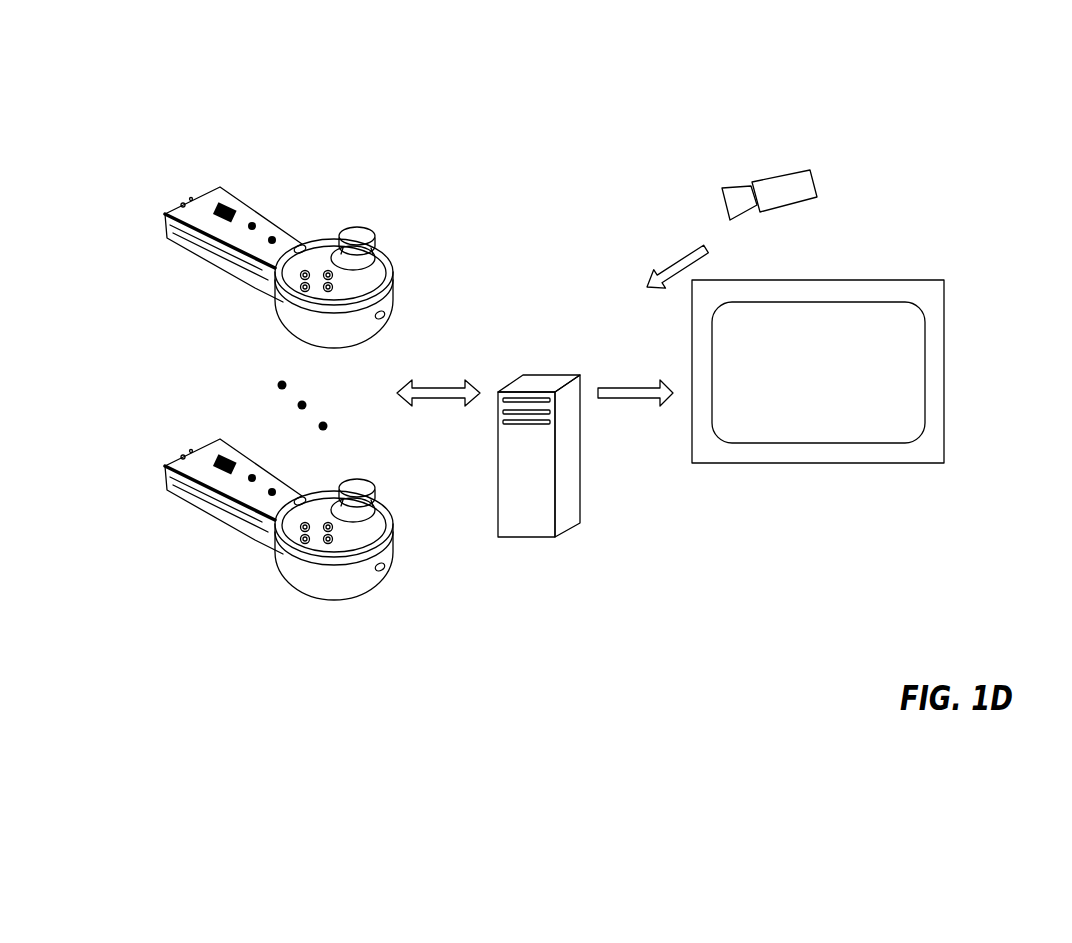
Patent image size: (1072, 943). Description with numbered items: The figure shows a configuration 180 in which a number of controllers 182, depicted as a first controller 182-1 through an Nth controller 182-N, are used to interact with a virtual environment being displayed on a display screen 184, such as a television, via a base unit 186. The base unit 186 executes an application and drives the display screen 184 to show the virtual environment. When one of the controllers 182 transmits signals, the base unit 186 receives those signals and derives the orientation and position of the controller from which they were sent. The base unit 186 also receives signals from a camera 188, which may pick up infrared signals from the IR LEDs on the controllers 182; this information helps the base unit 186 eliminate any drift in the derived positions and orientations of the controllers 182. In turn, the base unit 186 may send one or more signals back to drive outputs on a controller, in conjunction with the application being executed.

The configuration 180 is at (554, 358).
The controllers 182 is at (185, 635).
The controller 182-1 is at (311, 267).
The controller 182-N is at (312, 519).
The display screen 184 is at (818, 397).
The base unit 186 is at (539, 476).
The camera 188 is at (783, 188).